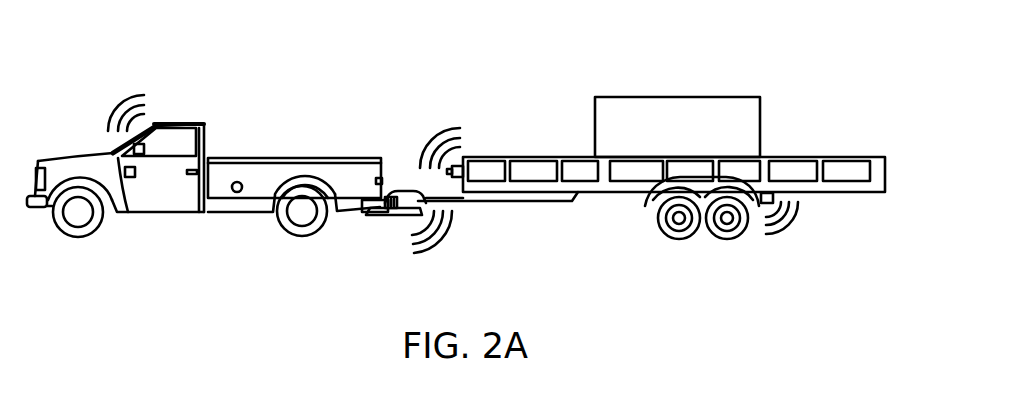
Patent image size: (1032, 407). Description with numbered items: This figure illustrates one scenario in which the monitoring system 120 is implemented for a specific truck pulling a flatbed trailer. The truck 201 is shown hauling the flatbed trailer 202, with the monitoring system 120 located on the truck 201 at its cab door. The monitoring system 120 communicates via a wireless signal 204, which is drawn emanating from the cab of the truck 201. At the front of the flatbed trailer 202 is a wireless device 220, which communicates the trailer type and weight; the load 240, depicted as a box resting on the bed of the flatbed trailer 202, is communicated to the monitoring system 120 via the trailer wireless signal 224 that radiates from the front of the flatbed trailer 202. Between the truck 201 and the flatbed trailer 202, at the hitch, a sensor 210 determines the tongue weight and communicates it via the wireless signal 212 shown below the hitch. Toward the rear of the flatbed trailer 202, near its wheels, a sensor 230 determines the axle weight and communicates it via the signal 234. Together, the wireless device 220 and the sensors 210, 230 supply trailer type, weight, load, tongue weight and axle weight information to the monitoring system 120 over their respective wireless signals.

The monitoring system 120 is at (132, 178).
The truck 201 is at (260, 172).
The flatbed trailer 202 is at (845, 155).
The wireless signal 204 is at (120, 103).
The sensor 210 is at (393, 213).
The wireless signal 212 is at (453, 227).
The wireless device 220 is at (452, 170).
The trailer wireless signal 224 is at (432, 132).
The sensor 230 is at (764, 205).
The signal 234 is at (803, 222).
The load 240 is at (720, 118).